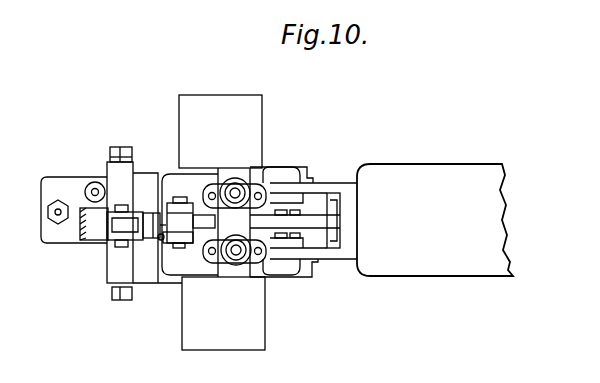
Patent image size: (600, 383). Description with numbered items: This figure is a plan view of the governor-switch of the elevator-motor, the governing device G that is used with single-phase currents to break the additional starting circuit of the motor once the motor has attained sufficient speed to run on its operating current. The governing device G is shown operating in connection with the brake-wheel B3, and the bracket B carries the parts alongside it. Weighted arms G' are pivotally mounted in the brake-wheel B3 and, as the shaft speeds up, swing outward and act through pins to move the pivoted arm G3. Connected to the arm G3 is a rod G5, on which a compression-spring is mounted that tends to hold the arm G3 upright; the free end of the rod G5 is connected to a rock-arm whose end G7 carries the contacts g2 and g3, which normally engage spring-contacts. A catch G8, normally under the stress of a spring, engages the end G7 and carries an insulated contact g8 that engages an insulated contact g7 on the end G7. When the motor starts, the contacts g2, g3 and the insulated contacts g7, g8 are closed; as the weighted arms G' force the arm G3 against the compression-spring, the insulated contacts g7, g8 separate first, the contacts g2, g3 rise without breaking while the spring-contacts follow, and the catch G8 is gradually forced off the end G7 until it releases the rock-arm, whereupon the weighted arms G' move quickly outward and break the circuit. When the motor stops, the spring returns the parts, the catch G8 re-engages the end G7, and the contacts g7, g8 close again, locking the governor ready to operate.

The brake-wheel B is at (78, 229).
The brake-wheel B3 is at (222, 208).
The governing device G is at (240, 222).
The weighted arms G' is at (133, 220).
The arm G3 is at (113, 226).
The rod G5 is at (153, 240).
The end of rock-arm G7 is at (303, 218).
The catch G8 is at (203, 176).
The contact g2 is at (256, 266).
The contact g3 is at (248, 184).
The insulated contact g7 is at (221, 220).
The insulated contact g8 is at (210, 243).